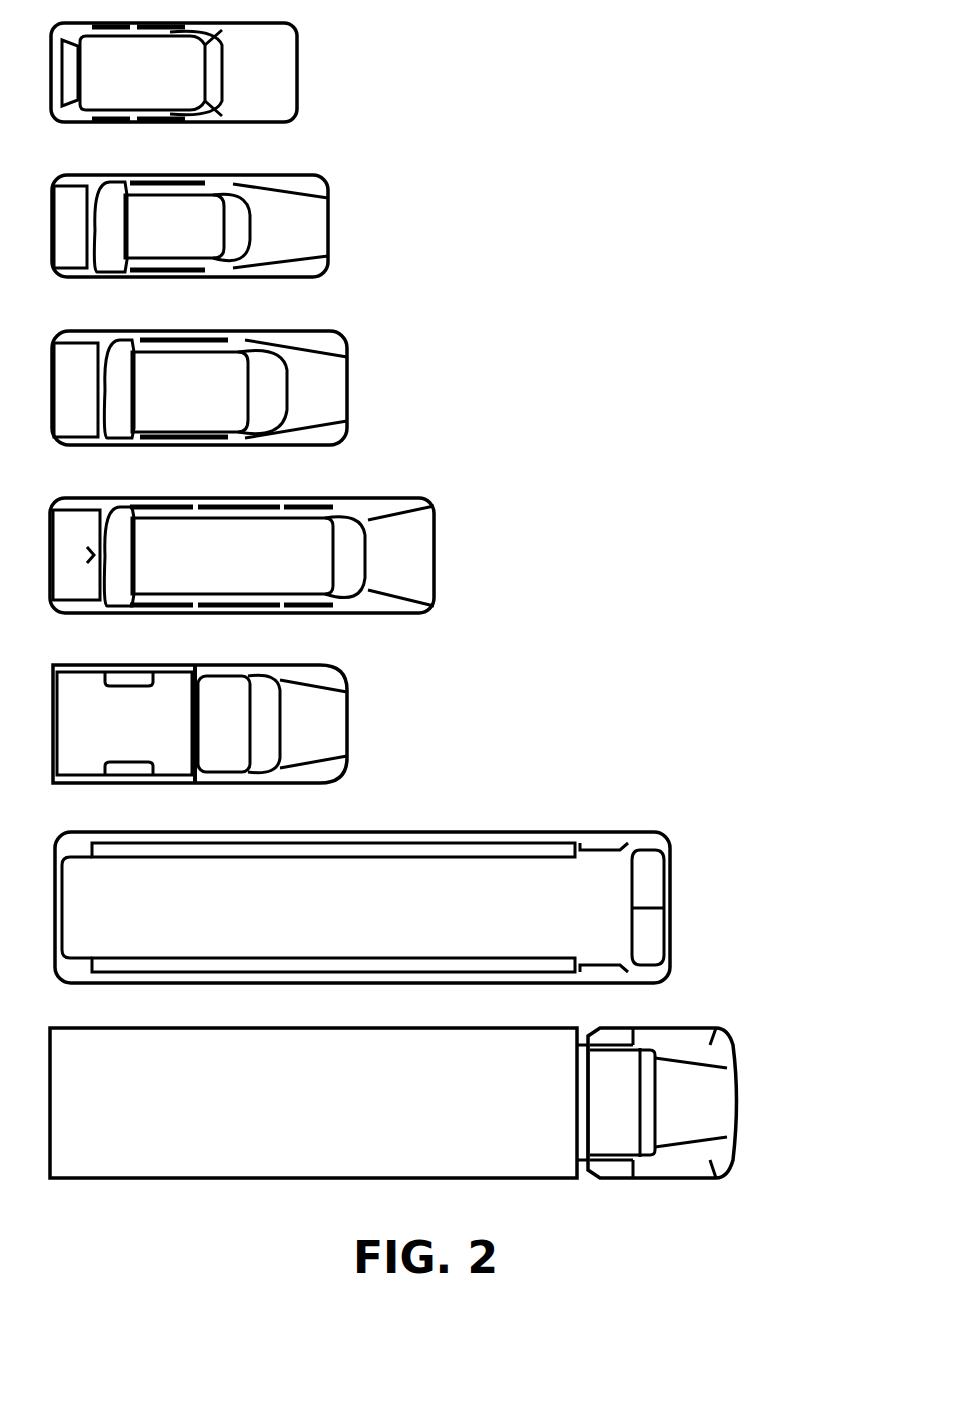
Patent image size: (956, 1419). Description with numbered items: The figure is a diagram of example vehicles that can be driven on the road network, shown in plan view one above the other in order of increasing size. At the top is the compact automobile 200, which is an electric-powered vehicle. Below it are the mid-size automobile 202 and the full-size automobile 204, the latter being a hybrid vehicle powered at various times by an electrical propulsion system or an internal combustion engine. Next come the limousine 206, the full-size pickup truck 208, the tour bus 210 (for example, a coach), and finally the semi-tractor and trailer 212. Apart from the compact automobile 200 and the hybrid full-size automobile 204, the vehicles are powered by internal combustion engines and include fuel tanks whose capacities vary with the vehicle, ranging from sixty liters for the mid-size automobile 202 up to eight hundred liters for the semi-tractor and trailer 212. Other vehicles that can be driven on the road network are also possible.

The compact automobile 200 is at (297, 66).
The mid-size automobile 202 is at (328, 224).
The full-size automobile 204 is at (347, 383).
The limousine 206 is at (434, 548).
The full-size pickup truck 208 is at (347, 720).
The tour bus 210 is at (670, 903).
The semi-tractor and trailer 212 is at (737, 1096).